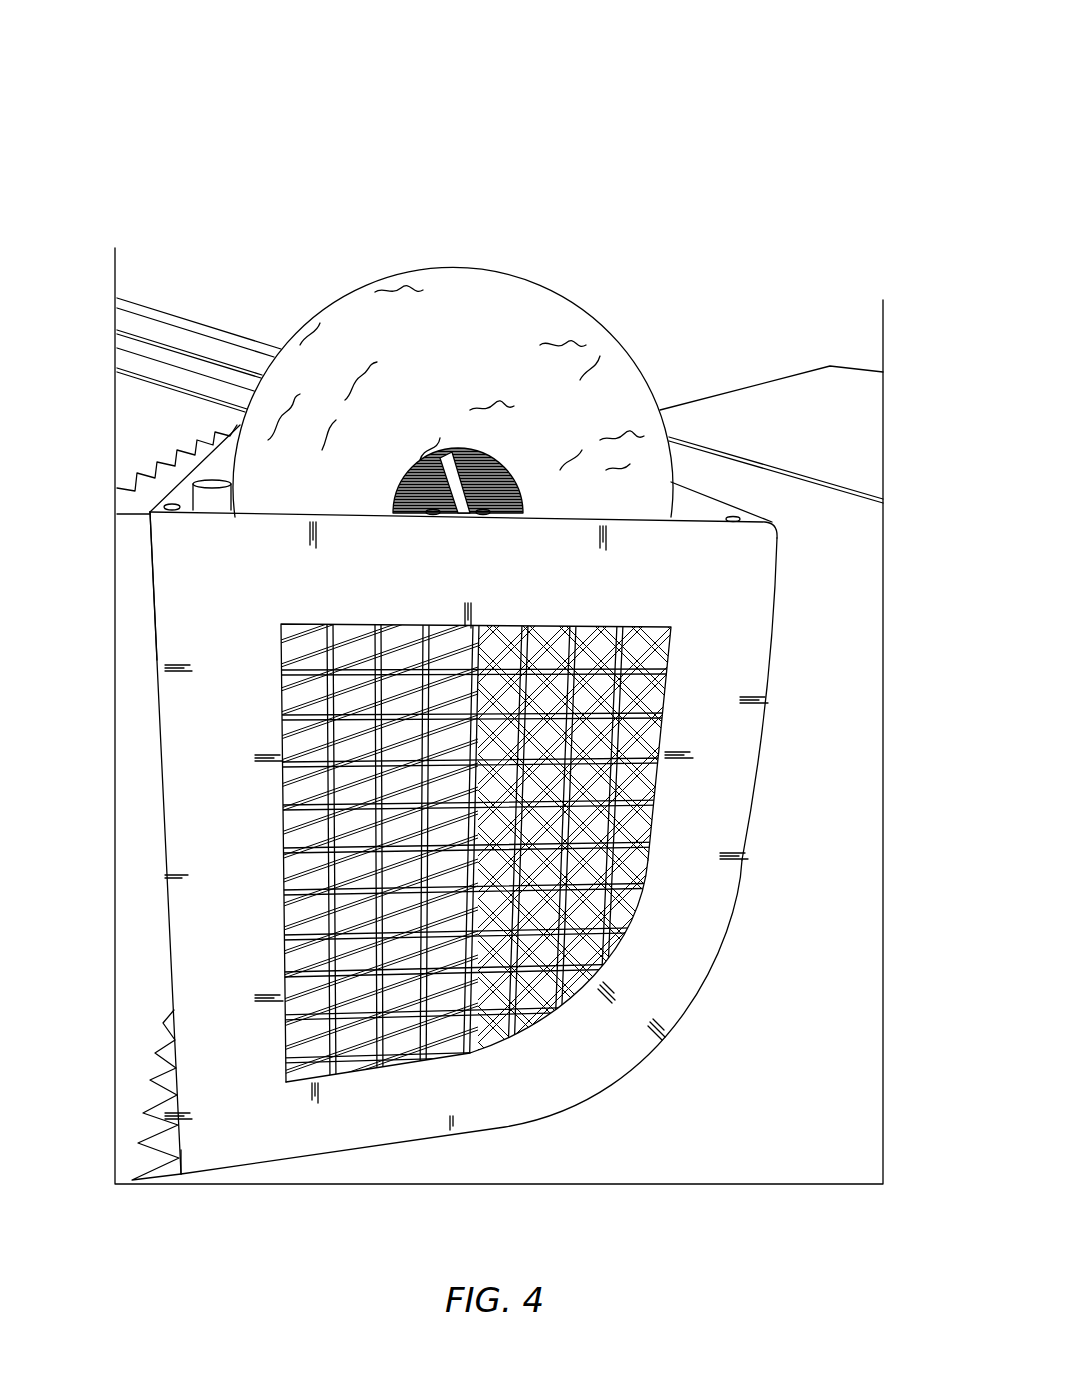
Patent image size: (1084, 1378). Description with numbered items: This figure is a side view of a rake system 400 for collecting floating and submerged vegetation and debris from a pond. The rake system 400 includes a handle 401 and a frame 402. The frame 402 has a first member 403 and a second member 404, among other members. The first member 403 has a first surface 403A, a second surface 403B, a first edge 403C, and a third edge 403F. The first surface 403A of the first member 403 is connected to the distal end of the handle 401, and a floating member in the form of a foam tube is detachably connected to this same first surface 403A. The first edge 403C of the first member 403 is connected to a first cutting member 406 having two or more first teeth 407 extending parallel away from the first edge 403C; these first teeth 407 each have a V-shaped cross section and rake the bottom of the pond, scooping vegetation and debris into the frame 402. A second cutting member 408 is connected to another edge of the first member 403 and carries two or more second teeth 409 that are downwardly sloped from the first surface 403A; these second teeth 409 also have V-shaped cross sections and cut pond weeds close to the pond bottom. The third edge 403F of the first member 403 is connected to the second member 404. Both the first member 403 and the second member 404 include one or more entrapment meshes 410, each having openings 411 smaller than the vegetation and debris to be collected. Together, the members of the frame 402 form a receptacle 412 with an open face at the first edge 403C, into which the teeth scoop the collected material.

The rake system 400 is at (172, 45).
The handle 401 is at (142, 348).
The frame 402 is at (817, 503).
The first member 403 is at (718, 498).
The first surface 403A is at (682, 494).
The second surface 403B is at (310, 826).
The first edge 403C is at (180, 503).
The third edge 403F is at (773, 603).
The second member 404 is at (203, 751).
The first cutting member 406 is at (142, 495).
The first teeth 407 is at (142, 468).
The second cutting member 408 is at (128, 1049).
The second teeth 409 is at (158, 1162).
The entrapment mesh 410 is at (557, 967).
The openings 411 is at (497, 1023).
The receptacle 412 is at (128, 651).